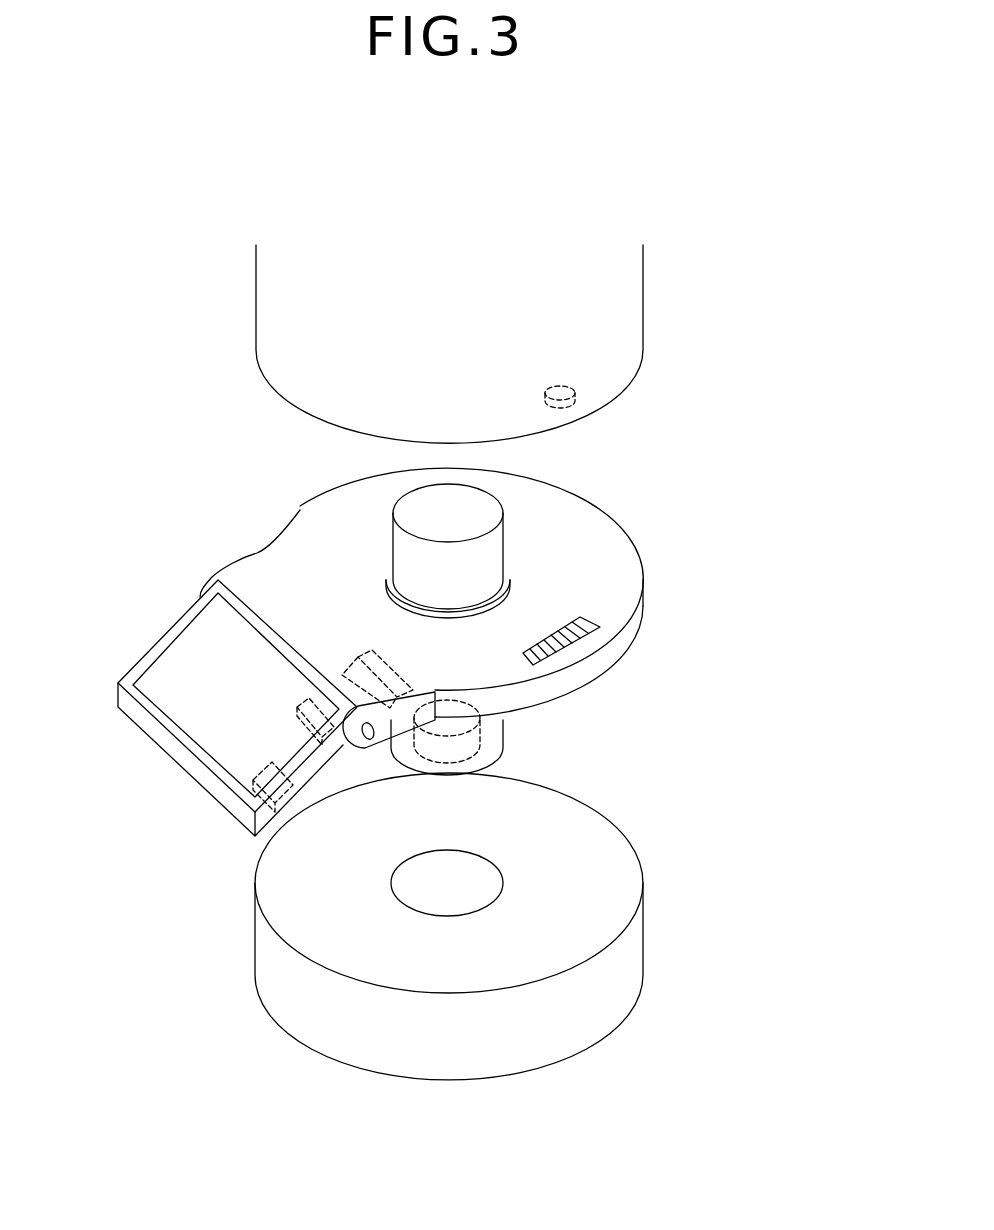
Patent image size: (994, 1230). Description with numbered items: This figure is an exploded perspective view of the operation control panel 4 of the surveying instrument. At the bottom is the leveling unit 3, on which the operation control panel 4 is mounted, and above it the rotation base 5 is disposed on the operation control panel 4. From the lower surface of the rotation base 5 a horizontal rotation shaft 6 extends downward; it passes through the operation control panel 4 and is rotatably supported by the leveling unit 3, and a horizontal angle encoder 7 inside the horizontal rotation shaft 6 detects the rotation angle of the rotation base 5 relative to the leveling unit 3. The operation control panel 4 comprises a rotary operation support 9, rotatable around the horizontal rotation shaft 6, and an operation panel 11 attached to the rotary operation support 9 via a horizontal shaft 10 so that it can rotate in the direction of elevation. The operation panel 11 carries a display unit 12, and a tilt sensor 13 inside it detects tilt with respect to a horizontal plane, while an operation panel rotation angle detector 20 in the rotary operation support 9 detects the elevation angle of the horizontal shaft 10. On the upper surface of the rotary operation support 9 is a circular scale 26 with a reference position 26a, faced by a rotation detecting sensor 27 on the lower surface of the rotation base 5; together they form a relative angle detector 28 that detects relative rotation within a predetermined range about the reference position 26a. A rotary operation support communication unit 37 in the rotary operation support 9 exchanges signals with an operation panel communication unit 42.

The leveling unit 3 is at (645, 942).
The operation control panel 4 is at (643, 598).
The rotation base 5 is at (643, 315).
The horizontal rotation shaft 6 is at (503, 538).
The horizontal angle encoder 7 is at (495, 742).
The rotary operation support 9 is at (605, 680).
The horizontal shaft 10 is at (366, 745).
The operation panel 11 is at (197, 773).
The display unit 12 is at (188, 672).
The tilt sensor 13 is at (273, 770).
The operation panel rotation angle detector 20 is at (360, 665).
The scale 26 is at (583, 637).
The reference position 26a is at (567, 645).
The rotation detecting sensor 27 is at (576, 392).
The relative angle detector 28 is at (580, 443).
The rotary operation support communication unit 37 is at (372, 667).
The operation panel communication unit 42 is at (297, 700).